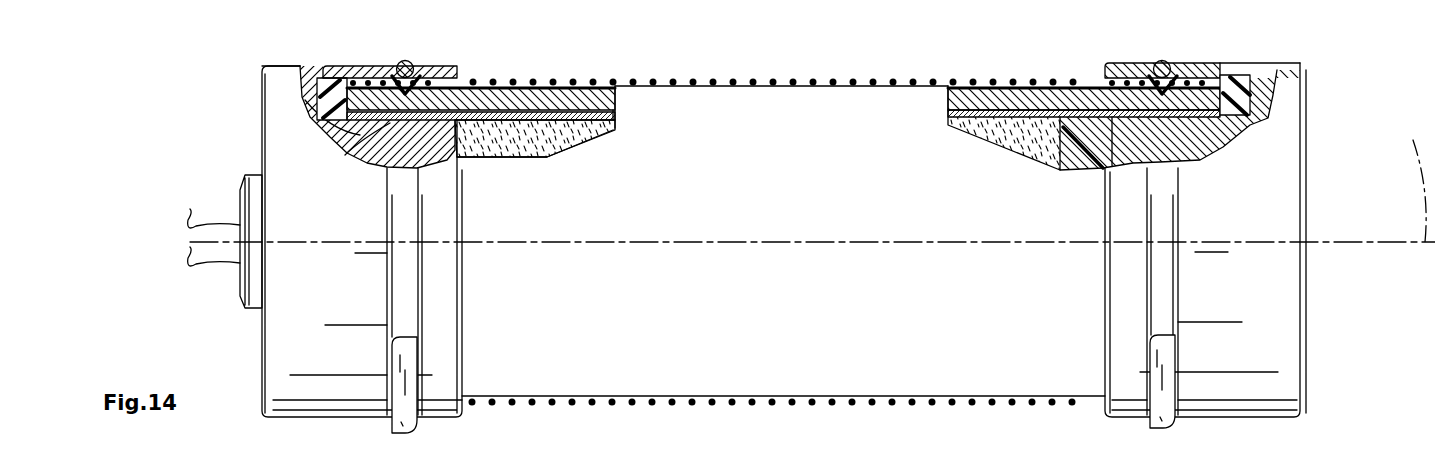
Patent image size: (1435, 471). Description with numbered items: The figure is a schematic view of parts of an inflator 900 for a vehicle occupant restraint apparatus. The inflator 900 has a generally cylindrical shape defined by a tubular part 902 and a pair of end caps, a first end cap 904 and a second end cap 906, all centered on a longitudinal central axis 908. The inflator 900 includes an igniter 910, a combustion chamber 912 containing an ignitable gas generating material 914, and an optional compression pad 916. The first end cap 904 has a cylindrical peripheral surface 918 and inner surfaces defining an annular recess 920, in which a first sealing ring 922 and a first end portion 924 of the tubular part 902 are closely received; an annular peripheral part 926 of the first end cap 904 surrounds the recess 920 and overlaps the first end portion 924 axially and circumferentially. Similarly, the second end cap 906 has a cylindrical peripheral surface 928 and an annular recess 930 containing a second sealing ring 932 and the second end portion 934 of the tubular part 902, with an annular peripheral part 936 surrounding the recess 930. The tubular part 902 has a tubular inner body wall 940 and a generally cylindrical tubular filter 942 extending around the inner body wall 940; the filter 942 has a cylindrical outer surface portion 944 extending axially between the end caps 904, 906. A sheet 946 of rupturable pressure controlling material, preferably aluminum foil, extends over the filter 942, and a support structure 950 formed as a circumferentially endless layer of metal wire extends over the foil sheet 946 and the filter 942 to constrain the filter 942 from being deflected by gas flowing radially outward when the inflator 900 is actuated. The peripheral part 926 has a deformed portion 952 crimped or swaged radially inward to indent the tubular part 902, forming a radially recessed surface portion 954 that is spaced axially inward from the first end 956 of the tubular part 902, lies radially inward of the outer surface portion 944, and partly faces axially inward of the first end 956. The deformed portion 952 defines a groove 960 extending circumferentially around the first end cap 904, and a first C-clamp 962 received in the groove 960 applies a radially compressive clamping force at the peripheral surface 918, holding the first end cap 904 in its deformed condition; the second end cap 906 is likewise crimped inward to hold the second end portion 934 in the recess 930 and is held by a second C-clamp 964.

The inflator 900 is at (224, 62).
The tubular part 902 is at (756, 70).
The first end cap 904 is at (245, 132).
The second end cap 906 is at (1325, 90).
The longitudinal central axis 908 is at (1408, 174).
The igniter 910 is at (222, 300).
The combustion chamber 912 is at (530, 143).
The ignitable gas generating material 914 is at (508, 162).
The compression pad 916 is at (1093, 143).
The cylindrical peripheral surface 918 is at (278, 66).
The annular recess 920 is at (480, 99).
The first sealing ring 922 is at (323, 95).
The first end portion 924 is at (428, 100).
The annular peripheral part 926 is at (358, 72).
The cylindrical peripheral surface 928 is at (1265, 63).
The annular recess 930 is at (1118, 93).
The second sealing ring 932 is at (1235, 80).
The second end portion 934 is at (1192, 90).
The annular peripheral part 936 is at (1140, 70).
The tubular inner body wall 940 is at (345, 160).
The tubular filter 942 is at (588, 104).
The cylindrical outer surface portion 944 is at (502, 87).
The sheet of rupturable pressure controlling material 946 is at (823, 127).
The support structure 950 is at (628, 80).
The deformed portion 952 is at (402, 60).
The radially recessed surface portion 954 is at (405, 92).
The first end 956 is at (340, 110).
The groove 960 is at (385, 287).
The first C-clamp 962 is at (405, 378).
The second C-clamp 964 is at (1165, 375).